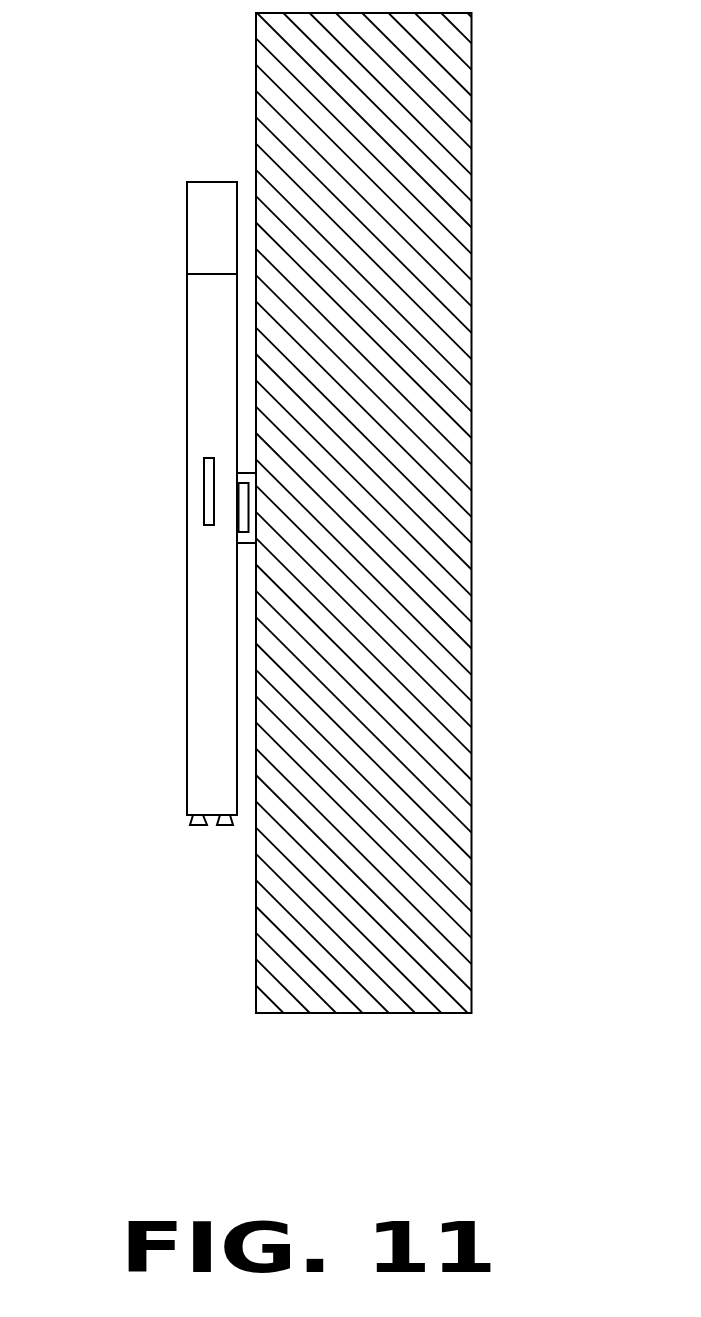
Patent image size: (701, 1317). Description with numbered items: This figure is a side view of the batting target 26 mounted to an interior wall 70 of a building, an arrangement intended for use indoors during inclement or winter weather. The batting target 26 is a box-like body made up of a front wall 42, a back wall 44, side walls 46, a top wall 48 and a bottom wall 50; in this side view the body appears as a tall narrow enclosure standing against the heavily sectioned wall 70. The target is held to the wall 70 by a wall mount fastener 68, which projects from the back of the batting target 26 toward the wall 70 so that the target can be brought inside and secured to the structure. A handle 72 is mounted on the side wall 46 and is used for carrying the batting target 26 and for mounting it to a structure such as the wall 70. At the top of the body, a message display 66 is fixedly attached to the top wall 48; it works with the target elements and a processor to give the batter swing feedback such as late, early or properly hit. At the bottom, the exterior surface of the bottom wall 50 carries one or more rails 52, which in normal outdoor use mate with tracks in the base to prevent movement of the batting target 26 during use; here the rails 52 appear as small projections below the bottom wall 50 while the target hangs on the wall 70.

The batting target 26 is at (183, 380).
The front wall 42 is at (186, 677).
The back wall 44 is at (247, 720).
The side wall 46 is at (212, 610).
The top wall 48 is at (212, 273).
The bottom wall 50 is at (184, 823).
The rail 52 is at (223, 825).
The message display 66 is at (207, 208).
The wall mount fastener 68 is at (243, 520).
The wall 70 is at (450, 210).
The handle 72 is at (205, 487).